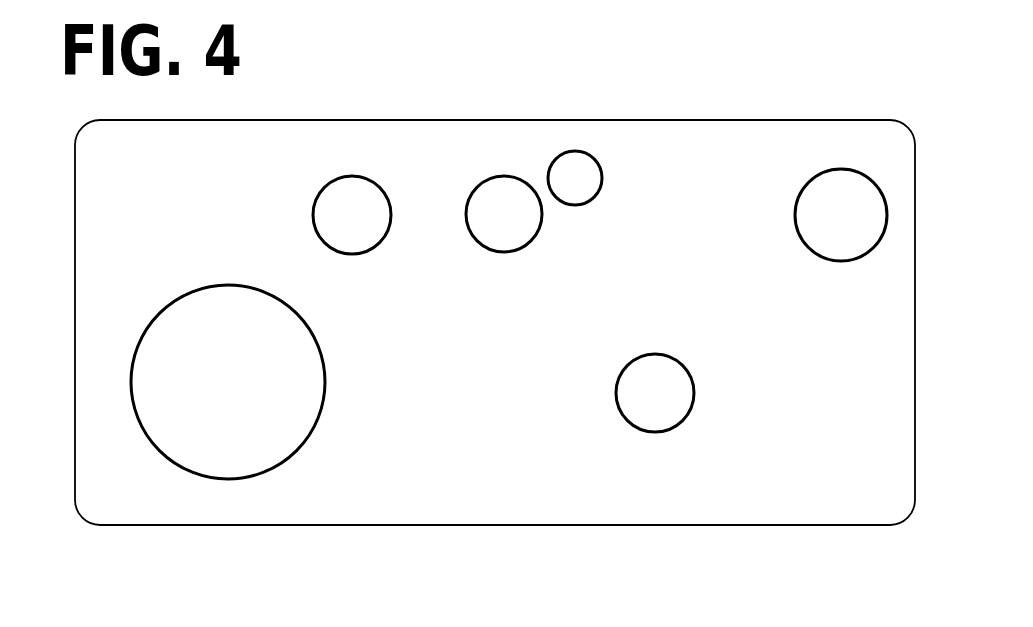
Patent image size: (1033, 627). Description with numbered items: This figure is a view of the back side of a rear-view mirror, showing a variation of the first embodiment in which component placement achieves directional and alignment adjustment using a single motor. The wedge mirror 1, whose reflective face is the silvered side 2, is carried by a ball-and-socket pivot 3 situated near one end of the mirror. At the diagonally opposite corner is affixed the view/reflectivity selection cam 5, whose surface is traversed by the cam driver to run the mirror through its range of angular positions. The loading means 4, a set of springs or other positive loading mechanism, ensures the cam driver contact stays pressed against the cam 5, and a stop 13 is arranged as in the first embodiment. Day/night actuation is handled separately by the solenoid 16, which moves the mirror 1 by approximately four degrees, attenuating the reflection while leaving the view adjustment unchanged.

The wedge mirror 1 is at (398, 527).
The silvered side 2 is at (658, 157).
The ball-and-socket pivot 3 is at (843, 170).
The loading means 4 is at (360, 177).
The view/reflectivity selection cam 5 is at (207, 477).
The stop 13 is at (477, 190).
The solenoid 16 is at (568, 152).